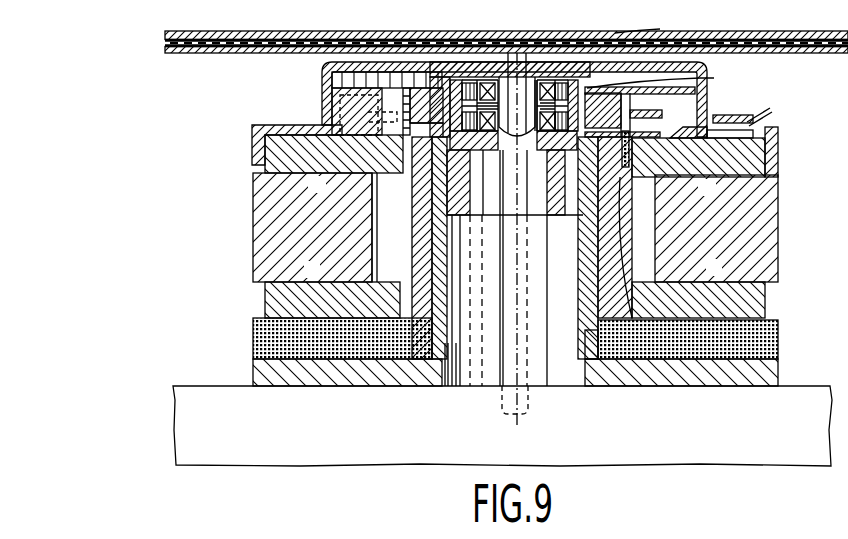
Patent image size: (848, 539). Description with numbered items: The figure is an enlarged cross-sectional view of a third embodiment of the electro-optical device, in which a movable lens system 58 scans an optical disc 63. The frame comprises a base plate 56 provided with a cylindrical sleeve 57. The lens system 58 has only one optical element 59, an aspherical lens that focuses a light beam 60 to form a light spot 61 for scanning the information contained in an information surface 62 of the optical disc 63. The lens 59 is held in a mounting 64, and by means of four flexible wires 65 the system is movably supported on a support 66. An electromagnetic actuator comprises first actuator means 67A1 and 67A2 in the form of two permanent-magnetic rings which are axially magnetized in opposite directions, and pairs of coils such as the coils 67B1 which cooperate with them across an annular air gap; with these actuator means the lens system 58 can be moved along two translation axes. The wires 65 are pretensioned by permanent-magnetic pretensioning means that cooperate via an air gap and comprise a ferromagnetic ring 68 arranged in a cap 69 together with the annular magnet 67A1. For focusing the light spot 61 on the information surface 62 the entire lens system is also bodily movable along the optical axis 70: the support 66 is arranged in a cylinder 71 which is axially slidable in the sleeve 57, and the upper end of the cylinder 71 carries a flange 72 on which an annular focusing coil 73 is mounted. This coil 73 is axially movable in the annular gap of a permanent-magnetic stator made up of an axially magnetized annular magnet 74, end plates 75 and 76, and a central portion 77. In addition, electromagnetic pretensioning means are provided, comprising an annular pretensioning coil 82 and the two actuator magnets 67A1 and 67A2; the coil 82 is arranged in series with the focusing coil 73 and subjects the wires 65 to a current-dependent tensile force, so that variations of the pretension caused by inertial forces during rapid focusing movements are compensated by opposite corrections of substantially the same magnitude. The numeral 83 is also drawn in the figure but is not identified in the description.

The base plate 56 is at (755, 378).
The cylindrical sleeve 57 is at (430, 267).
The lens system 58 is at (560, 142).
The optical element 59 is at (553, 78).
The light beam 60 is at (530, 403).
The light spot 61 is at (530, 85).
The information surface 62 is at (212, 32).
The optical disc 63 is at (205, 54).
The mounting 64 is at (533, 215).
The flexible wires 65 is at (538, 190).
The support 66 is at (430, 203).
The permanent-magnetic ring 67A1 is at (622, 34).
The permanent-magnetic ring 67A2 is at (475, 300).
The pair of coils 67B1 is at (460, 105).
The ferromagnetic ring 68 is at (562, 78).
The cap 69 is at (468, 87).
The optical axis 70 is at (518, 302).
The cylinder 71 is at (448, 303).
The flange 72 is at (402, 100).
The focusing coil 73 is at (614, 178).
The annular magnet 74 is at (752, 242).
The end plate 75 is at (760, 158).
The end plate 76 is at (745, 305).
The central portion 77 is at (612, 258).
The pretensioning coil 82 is at (433, 95).
The liner 83 is at (460, 301).